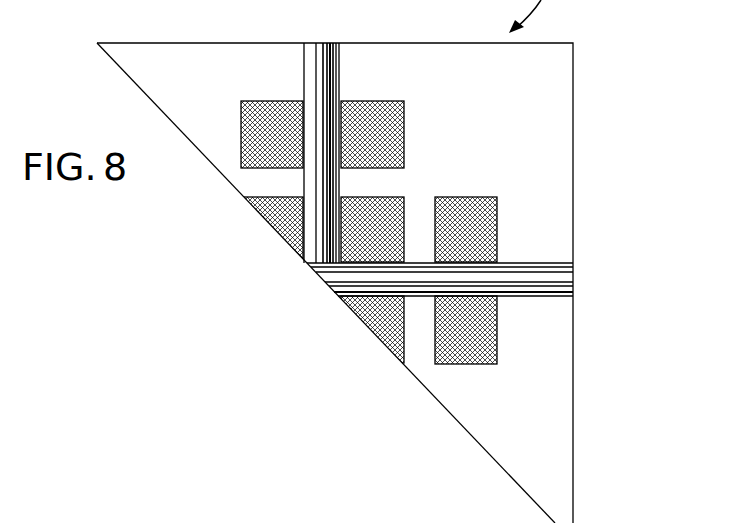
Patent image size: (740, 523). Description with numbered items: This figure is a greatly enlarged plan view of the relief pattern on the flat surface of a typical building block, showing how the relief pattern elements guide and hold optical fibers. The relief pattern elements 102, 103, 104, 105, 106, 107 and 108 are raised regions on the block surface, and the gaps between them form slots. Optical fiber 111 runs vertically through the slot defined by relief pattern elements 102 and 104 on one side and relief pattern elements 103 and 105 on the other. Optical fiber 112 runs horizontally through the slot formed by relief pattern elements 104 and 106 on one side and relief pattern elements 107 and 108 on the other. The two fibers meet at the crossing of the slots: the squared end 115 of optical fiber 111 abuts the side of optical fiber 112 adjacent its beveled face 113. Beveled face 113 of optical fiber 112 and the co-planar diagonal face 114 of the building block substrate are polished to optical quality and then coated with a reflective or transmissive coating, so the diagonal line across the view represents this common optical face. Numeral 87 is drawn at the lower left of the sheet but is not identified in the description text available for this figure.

The substrate 87 is at (85, 522).
The relief pattern element 102 is at (404, 103).
The relief pattern element 103 is at (253, 100).
The relief pattern element 104 is at (400, 197).
The relief pattern element 105 is at (266, 227).
The relief pattern element 106 is at (485, 197).
The relief pattern element 107 is at (388, 350).
The relief pattern element 108 is at (497, 336).
The optical fiber 111 is at (320, 43).
The optical fiber 112 is at (573, 263).
The beveled face 113 is at (318, 292).
The diagonal face 114 is at (424, 392).
The squared end 115 is at (316, 280).